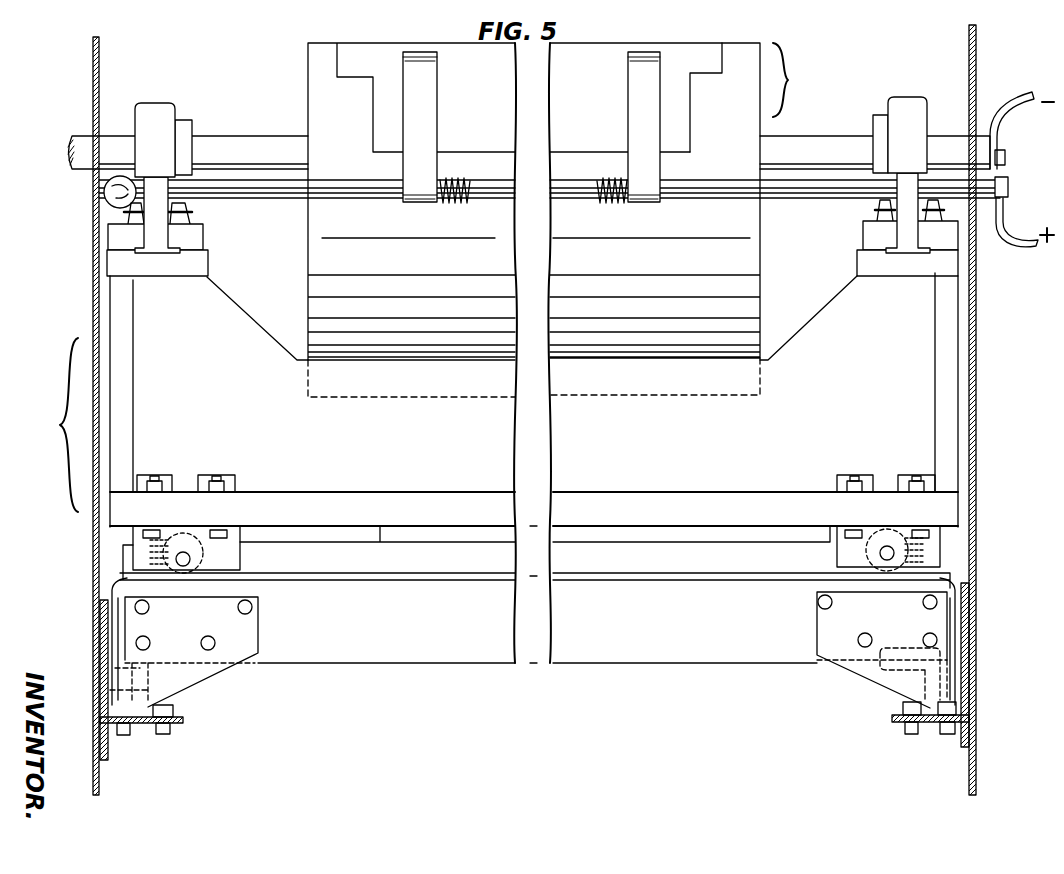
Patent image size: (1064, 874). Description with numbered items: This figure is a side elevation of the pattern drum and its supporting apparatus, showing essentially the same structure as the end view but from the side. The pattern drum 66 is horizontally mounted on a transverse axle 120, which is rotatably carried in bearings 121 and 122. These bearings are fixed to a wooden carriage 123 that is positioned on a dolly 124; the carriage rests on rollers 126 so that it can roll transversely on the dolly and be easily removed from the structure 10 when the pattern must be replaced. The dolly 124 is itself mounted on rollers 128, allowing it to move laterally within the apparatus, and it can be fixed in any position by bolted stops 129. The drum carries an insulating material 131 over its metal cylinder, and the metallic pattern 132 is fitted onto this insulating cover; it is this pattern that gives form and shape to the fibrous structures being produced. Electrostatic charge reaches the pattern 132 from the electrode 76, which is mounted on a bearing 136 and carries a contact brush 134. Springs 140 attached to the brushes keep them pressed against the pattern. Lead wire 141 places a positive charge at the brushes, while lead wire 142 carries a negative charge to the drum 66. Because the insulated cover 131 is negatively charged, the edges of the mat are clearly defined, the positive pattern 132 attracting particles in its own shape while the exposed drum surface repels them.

The structure 10 is at (493, 400).
The pattern drum 66 is at (688, 353).
The electrode 76 is at (267, 190).
The transverse axle 120 is at (246, 146).
The bearing 121 is at (155, 112).
The bearing 122 is at (905, 105).
The wooden carriage 123 is at (288, 340).
The dolly 124 is at (374, 652).
The roller 126 is at (205, 575).
The roller 128 is at (100, 656).
The bolted stop 129 is at (243, 628).
The insulating material 131 is at (318, 79).
The metallic pattern 132 is at (706, 62).
The contact brush 134 is at (420, 82).
The bearing 136 is at (156, 233).
The spring 140 is at (448, 178).
The lead wire 141 is at (1016, 246).
The lead wire 142 is at (1018, 92).